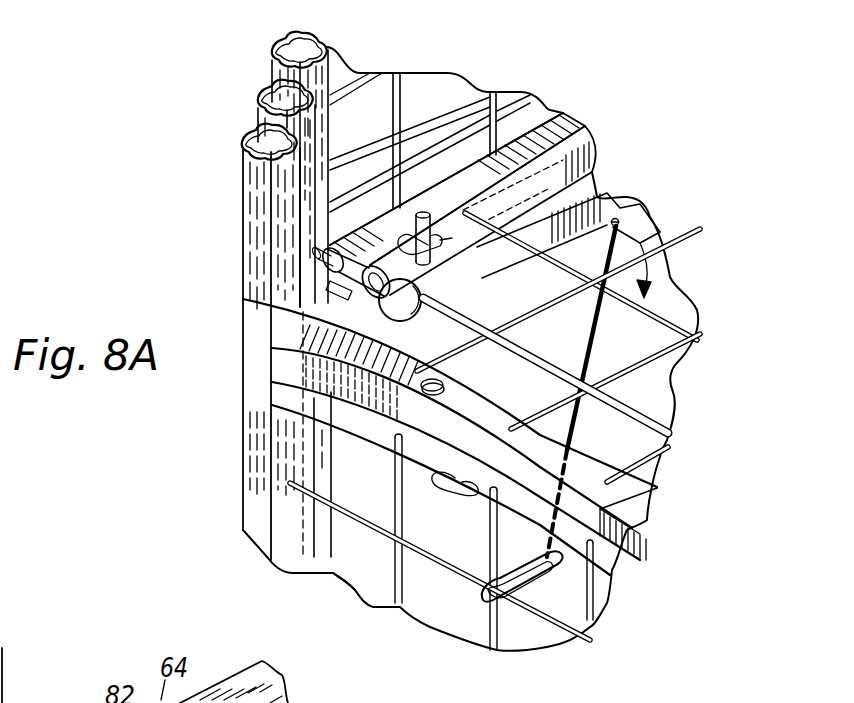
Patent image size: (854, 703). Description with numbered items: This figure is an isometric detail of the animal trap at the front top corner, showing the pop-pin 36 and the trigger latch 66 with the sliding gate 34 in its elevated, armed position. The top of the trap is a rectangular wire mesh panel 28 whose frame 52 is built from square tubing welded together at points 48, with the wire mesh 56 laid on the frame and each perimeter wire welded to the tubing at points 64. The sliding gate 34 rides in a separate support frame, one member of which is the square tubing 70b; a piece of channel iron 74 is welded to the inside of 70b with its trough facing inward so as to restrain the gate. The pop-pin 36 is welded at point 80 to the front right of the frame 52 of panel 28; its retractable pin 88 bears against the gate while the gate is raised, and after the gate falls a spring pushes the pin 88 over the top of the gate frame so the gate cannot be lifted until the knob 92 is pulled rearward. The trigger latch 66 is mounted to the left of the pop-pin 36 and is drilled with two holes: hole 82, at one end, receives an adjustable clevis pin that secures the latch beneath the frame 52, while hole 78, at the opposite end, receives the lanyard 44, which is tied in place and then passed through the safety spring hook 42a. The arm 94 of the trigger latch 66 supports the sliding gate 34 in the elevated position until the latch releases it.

The sliding gate 34 is at (277, 47).
The channel iron 74 is at (260, 97).
The square tubing frame member 70b is at (244, 150).
The retractable pin 88 is at (330, 257).
The pop-pin 36 is at (328, 268).
The weld point 80 is at (368, 282).
The knob 92 is at (395, 300).
The hole 82 is at (452, 228).
The arm 94 is at (525, 195).
The trigger latch 66 is at (611, 205).
The hole 78 is at (620, 222).
The lanyard 44 is at (547, 313).
The wire mesh panel 28 is at (660, 436).
The frame 52 is at (655, 492).
The weld points 48 is at (290, 390).
The weld points 64 is at (292, 482).
The wire mesh 56 is at (366, 577).
The safety spring hook 42a is at (531, 592).